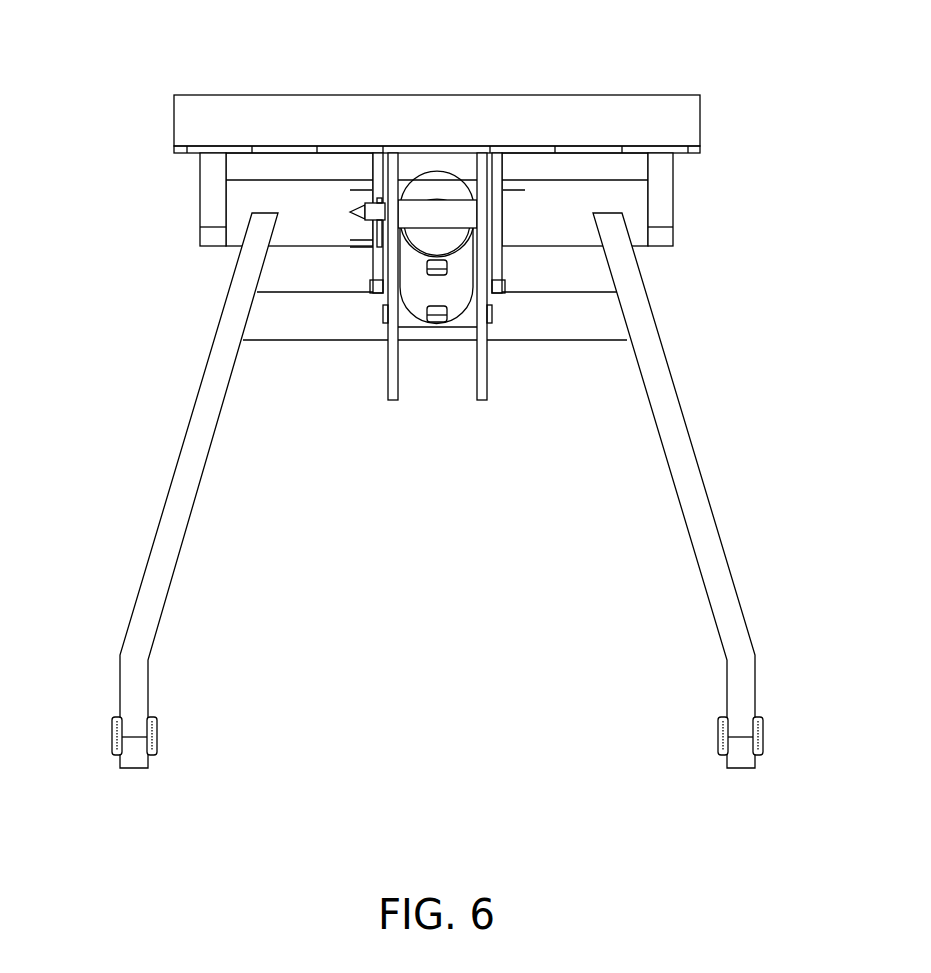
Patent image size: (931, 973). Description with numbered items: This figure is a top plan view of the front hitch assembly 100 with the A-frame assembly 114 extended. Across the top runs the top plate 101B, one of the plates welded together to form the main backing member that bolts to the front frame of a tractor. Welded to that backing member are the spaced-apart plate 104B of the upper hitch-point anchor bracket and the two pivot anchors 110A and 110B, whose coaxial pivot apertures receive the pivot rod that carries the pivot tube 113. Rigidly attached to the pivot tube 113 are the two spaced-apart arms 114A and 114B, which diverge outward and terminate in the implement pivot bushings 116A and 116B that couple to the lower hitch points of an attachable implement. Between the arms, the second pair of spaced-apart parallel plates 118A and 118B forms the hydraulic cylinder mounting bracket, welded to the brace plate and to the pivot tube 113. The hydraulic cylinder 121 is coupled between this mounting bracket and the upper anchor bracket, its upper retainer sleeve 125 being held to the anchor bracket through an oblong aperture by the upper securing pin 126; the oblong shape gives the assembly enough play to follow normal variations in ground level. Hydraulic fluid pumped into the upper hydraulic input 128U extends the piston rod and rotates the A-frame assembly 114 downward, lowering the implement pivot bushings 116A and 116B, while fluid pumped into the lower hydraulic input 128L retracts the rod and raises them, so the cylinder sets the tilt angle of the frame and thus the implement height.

The front hitch assembly 100 is at (142, 32).
The top plate 101B is at (437, 113).
The spaced-apart plate 104B is at (380, 190).
The pivot anchor 110A is at (212, 197).
The pivot anchor 110B is at (660, 197).
The pivot tube 113 is at (550, 210).
The A-frame assembly 114 is at (337, 319).
The arm 114A is at (190, 478).
The arm 114B is at (688, 478).
The implement pivot bushing 116A is at (115, 737).
The implement pivot bushing 116B is at (760, 737).
The spaced-apart parallel plate 118A is at (391, 378).
The spaced-apart parallel plate 118B is at (483, 378).
The hydraulic cylinder 121 is at (428, 192).
The upper retainer sleeve 125 is at (445, 212).
The upper securing pin 126 is at (350, 212).
The upper hydraulic input 128U is at (447, 266).
The lower hydraulic input 128L is at (447, 312).